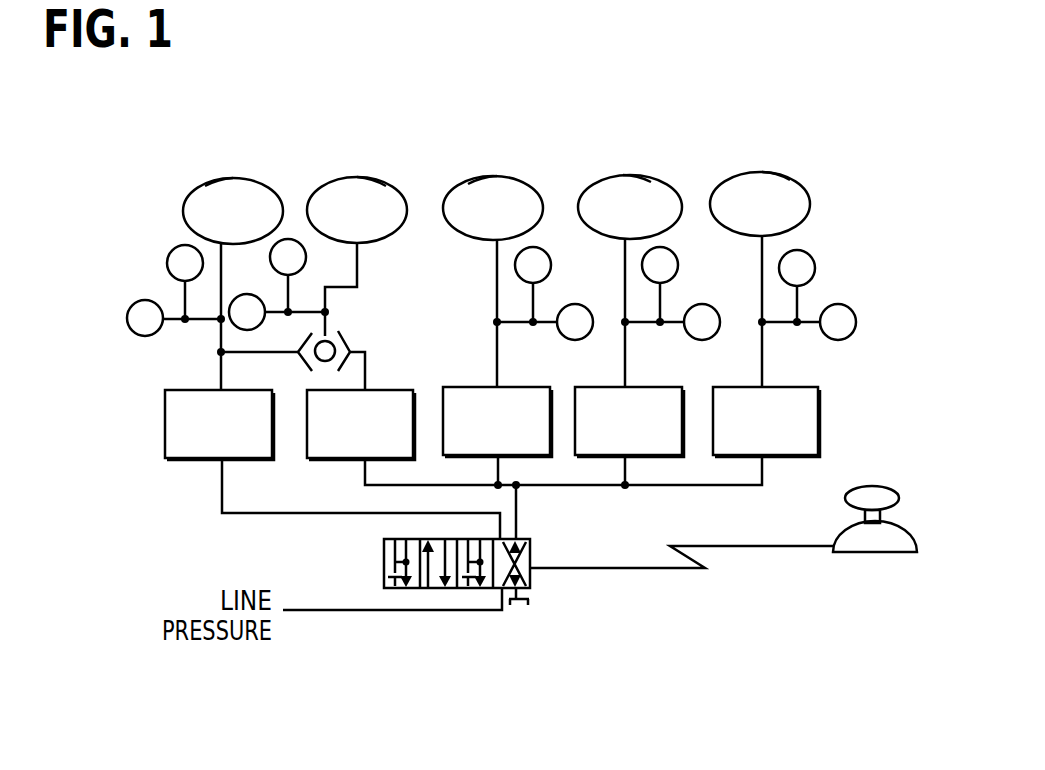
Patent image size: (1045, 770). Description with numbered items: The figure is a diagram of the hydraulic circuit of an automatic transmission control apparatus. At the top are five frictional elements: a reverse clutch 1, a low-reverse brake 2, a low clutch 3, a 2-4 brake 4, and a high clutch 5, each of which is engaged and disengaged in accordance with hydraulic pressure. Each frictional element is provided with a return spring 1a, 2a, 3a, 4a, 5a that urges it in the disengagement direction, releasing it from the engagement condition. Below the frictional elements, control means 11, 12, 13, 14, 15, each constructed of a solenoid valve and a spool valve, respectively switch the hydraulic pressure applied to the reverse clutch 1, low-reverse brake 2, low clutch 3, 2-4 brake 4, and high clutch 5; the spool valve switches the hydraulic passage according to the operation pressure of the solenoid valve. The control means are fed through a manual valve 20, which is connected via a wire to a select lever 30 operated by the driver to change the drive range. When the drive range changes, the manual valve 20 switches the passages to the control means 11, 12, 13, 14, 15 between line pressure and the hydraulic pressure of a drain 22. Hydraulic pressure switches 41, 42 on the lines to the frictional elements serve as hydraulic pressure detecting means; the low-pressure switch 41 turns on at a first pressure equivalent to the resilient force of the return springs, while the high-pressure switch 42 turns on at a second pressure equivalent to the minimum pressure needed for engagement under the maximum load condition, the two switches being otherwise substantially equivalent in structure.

The reverse clutch 1 is at (233, 178).
The return spring 1a is at (223, 178).
The low-reverse brake 2 is at (355, 177).
The return spring 2a is at (370, 178).
The low clutch 3 is at (497, 176).
The return spring 3a is at (485, 176).
The 2-4 brake 4 is at (623, 175).
The return spring 4a is at (631, 175).
The high clutch 5 is at (762, 172).
The return spring 5a is at (776, 174).
The control means 11 is at (197, 459).
The control means 12 is at (335, 459).
The control means 13 is at (470, 387).
The control means 14 is at (600, 387).
The control means 15 is at (790, 387).
The manual valve 20 is at (384, 563).
The drain 22 is at (522, 607).
The select lever 30 is at (885, 487).
The pressure switch 41 is at (152, 335).
The pressure switch 42 is at (172, 249).